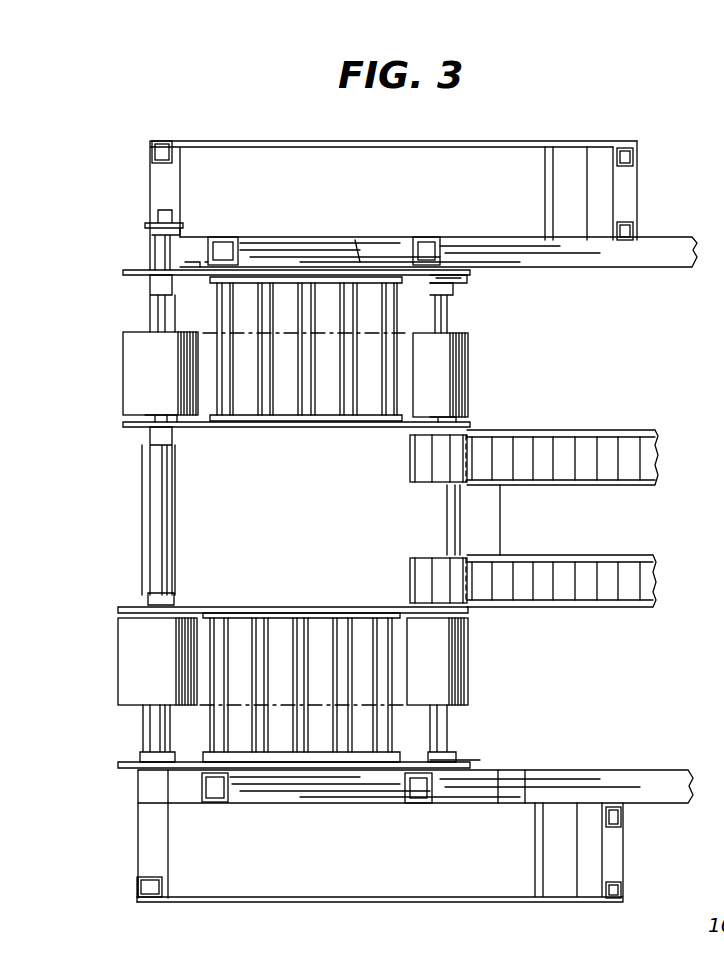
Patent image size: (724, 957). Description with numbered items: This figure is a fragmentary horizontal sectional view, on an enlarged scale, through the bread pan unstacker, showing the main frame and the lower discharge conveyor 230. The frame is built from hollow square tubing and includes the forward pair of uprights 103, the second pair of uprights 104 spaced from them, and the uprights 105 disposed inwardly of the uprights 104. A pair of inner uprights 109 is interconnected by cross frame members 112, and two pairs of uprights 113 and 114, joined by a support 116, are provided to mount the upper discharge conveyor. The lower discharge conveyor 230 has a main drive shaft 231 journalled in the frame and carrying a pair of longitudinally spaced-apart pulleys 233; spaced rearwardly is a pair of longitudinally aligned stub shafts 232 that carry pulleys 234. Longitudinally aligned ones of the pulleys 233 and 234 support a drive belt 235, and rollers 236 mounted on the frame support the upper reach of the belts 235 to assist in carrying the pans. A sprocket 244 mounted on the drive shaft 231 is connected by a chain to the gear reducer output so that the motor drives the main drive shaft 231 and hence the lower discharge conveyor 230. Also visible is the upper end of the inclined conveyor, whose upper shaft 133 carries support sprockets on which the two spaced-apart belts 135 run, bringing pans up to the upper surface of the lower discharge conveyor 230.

The uprights 103 is at (150, 148).
The uprights 104 is at (637, 147).
The uprights 105 is at (637, 232).
The inner uprights 109 is at (512, 788).
The cross frame member 112 is at (318, 243).
The uprights 113 is at (224, 240).
The uprights 114 is at (436, 240).
The support 116 is at (360, 265).
The upper shaft 133 is at (447, 516).
The belt 135 is at (658, 455).
The lower discharge conveyor 230 is at (288, 475).
The main drive shaft 231 is at (158, 508).
The stub shafts 232 is at (445, 318).
The pulleys 233 is at (130, 372).
The pulleys 234 is at (470, 378).
The drive belt 235 is at (205, 428).
The rollers 236 is at (357, 398).
The sprocket 244 is at (146, 224).